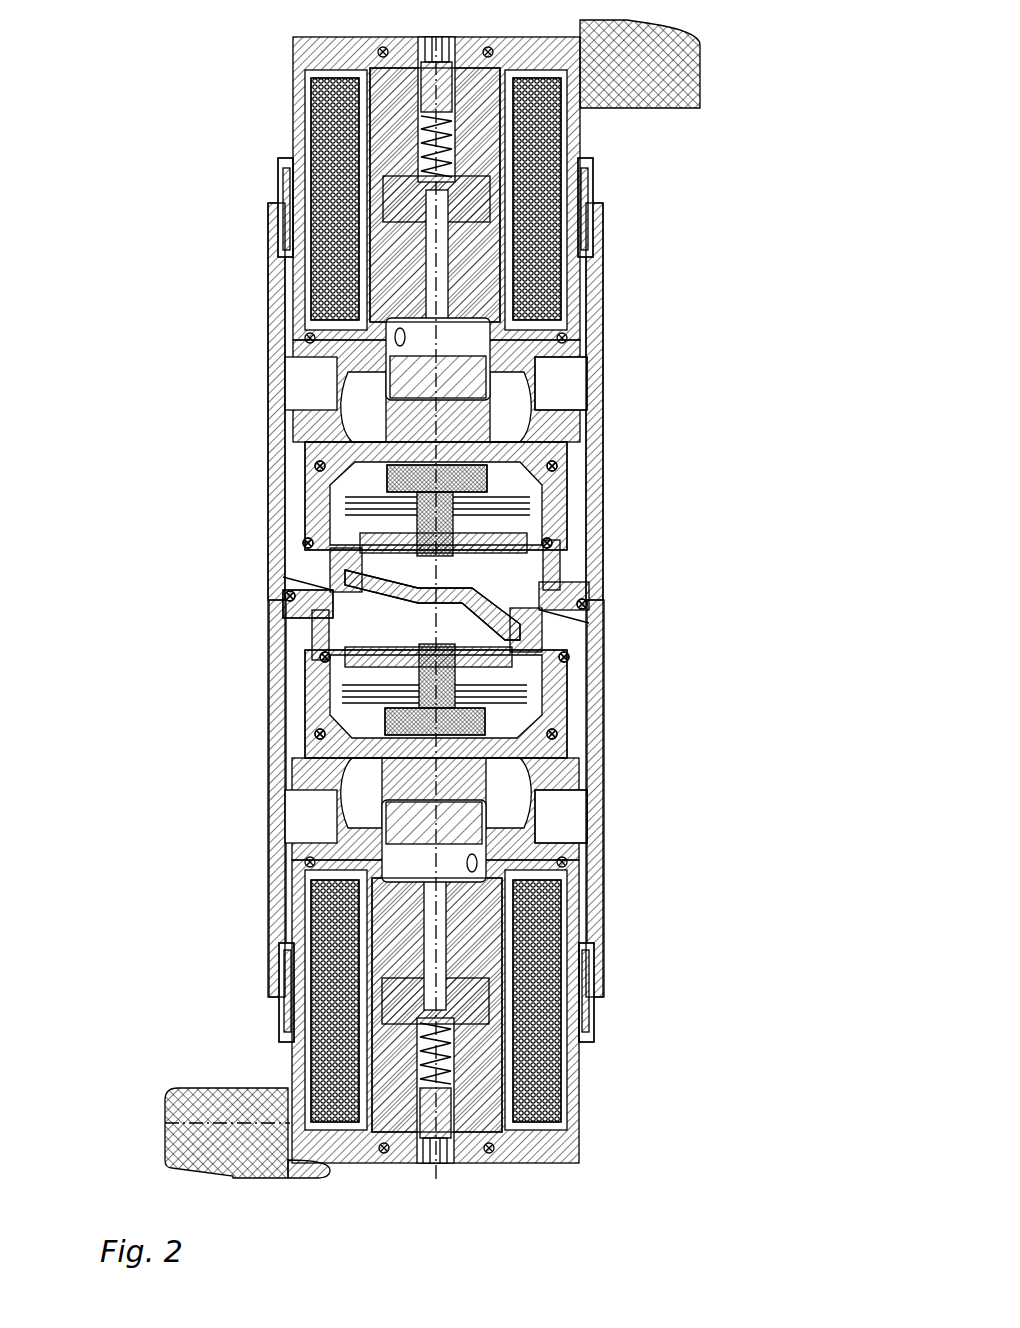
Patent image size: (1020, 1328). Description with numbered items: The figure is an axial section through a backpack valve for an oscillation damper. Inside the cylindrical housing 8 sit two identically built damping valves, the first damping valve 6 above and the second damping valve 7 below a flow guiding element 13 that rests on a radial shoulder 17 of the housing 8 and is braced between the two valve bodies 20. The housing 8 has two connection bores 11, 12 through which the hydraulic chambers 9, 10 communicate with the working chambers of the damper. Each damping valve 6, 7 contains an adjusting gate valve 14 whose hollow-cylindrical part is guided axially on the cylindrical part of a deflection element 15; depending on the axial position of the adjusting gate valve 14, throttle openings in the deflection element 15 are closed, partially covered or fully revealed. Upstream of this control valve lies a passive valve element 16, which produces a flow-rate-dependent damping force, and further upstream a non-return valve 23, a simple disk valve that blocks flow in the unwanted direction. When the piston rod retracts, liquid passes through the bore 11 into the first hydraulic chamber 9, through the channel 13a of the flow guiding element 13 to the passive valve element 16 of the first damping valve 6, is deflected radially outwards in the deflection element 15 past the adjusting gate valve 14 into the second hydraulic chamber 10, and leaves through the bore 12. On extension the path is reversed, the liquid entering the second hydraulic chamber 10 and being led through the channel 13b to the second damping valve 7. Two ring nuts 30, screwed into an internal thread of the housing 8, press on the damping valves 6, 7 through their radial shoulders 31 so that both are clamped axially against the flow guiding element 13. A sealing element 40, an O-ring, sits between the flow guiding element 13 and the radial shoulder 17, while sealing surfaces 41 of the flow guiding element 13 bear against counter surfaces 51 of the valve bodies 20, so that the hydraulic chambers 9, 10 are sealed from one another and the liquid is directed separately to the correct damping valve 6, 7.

The first damping valve 6 is at (132, 363).
The second damping valve 7 is at (117, 836).
The housing 8 is at (594, 330).
The first hydraulic chamber 9 is at (570, 811).
The second hydraulic chamber 10 is at (576, 402).
The connection bore 11 is at (590, 647).
The connection bore 12 is at (585, 503).
The flow guiding element 13 is at (300, 552).
The channel 13a is at (560, 600).
The channel 13b is at (295, 607).
The adjusting gate valve 14 is at (470, 297).
The deflection element 15 is at (560, 447).
The passive valve element 16 is at (345, 480).
The radial shoulder 17 is at (300, 583).
The valve body 20 is at (560, 527).
The non-return valve 23 is at (560, 515).
The ring nut 30 is at (585, 218).
The radial shoulder 31 is at (268, 227).
The sealing element 40 is at (575, 592).
The sealing surface 41 is at (320, 488).
The counter surface 51 is at (325, 500).